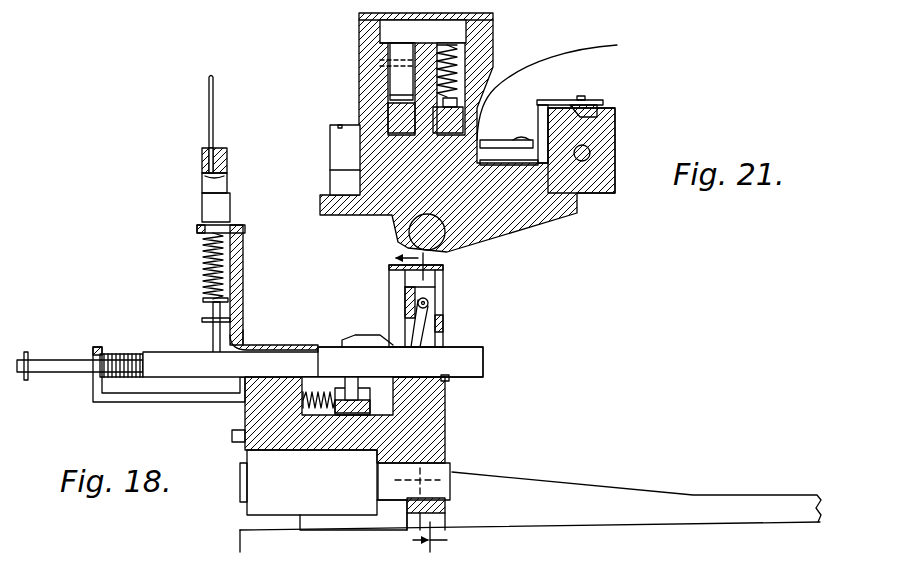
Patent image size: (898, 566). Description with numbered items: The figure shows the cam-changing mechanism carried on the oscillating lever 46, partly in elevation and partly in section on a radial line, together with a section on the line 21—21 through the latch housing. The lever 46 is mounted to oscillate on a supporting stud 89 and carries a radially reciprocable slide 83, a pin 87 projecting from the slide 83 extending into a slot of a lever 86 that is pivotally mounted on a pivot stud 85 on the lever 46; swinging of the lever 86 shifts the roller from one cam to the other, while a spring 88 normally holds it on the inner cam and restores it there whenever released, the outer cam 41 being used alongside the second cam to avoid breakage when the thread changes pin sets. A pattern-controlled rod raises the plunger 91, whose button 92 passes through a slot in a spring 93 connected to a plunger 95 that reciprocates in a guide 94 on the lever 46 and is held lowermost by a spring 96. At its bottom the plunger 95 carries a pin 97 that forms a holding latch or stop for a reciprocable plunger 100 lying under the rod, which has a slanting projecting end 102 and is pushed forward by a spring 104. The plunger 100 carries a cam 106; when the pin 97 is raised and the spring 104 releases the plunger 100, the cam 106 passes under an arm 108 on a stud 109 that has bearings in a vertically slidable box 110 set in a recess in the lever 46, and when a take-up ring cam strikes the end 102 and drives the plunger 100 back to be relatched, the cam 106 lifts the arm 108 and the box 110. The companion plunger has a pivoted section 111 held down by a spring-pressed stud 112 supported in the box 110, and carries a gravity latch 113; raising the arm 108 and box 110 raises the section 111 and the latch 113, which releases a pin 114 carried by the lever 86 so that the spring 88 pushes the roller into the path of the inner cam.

In FIG. 18, the cam 41 is at (512, 485).
In FIG. 21, the lever 46 is at (553, 210).
In FIG. 18, the lever 46 is at (437, 407).
In FIG. 21, the slide 83 is at (617, 125).
In FIG. 21, the pivot stud 85 is at (330, 128).
In FIG. 21, the lever 86 is at (555, 100).
In FIG. 18, the lever 86 is at (350, 412).
In FIG. 21, the pin 87 is at (581, 96).
In FIG. 18, the spring 88 is at (313, 410).
In FIG. 21, the supporting stud 89 is at (440, 234).
In FIG. 18, the supporting stud 89 is at (450, 470).
In FIG. 18, the plunger 91 is at (214, 108).
In FIG. 18, the button 92 is at (228, 177).
In FIG. 18, the spring 93 is at (228, 150).
In FIG. 18, the guide 94 is at (236, 227).
In FIG. 18, the plunger 95 is at (210, 208).
In FIG. 18, the spring 96 is at (204, 266).
In FIG. 18, the pin 97 is at (213, 336).
In FIG. 21, the plunger 100 is at (400, 117).
In FIG. 18, the plunger 100 is at (292, 372).
In FIG. 18, the projecting end 102 is at (475, 360).
In FIG. 18, the spring 104 is at (120, 353).
In FIG. 18, the cam 106 is at (373, 340).
In FIG. 21, the arm 108 is at (400, 84).
In FIG. 18, the arm 108 is at (437, 325).
In FIG. 21, the stud 109 is at (405, 31).
In FIG. 18, the stud 109 is at (430, 303).
In FIG. 21, the box 110 is at (460, 58).
In FIG. 18, the box 110 is at (405, 295).
In FIG. 21, the pivoted section 111 is at (450, 118).
In FIG. 21, the spring-pressed stud 112 is at (567, 87).
In FIG. 18, the gravity latch 113 is at (445, 383).
In FIG. 18, the pin 114 is at (357, 390).
In FIG. 18, the section line 21- 21 is at (402, 402).